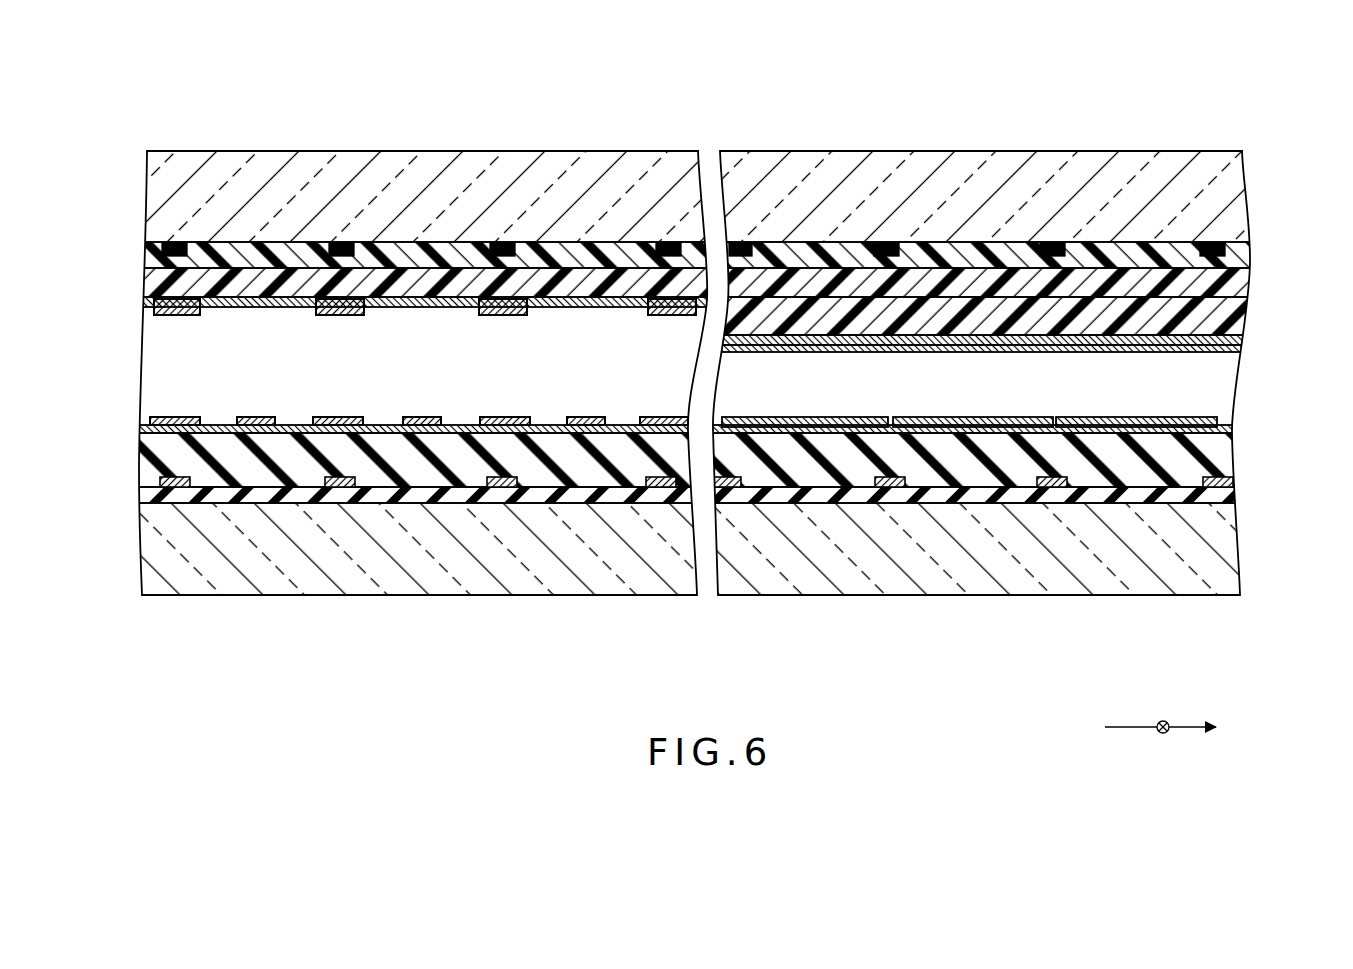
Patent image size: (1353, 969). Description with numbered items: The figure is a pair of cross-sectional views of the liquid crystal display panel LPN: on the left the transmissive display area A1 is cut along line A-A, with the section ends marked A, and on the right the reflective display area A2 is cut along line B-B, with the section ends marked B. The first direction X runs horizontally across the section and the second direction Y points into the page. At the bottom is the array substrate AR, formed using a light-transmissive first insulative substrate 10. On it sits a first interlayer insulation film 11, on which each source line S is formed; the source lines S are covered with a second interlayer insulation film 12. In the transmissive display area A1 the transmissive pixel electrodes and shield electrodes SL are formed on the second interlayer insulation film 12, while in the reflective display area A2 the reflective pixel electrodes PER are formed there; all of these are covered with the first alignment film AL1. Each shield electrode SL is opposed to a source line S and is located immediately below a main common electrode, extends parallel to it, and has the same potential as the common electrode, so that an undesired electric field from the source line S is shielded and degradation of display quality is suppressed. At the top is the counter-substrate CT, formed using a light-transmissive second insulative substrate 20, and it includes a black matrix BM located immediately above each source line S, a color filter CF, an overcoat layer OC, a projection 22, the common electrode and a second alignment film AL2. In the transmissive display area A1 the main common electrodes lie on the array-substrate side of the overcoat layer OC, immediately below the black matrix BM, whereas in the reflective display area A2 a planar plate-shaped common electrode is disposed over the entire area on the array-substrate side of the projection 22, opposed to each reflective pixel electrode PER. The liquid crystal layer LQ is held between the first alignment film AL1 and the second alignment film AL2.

The second insulative substrate 20 is at (152, 189).
The color filter CF is at (152, 255).
The overcoat layer OC is at (152, 281).
The projection 22 is at (1246, 313).
The second alignment film AL2 is at (150, 316).
The liquid crystal layer LQ is at (147, 371).
The first alignment film AL1 is at (145, 414).
The shield electrode SL is at (176, 416).
The reflective pixel electrode PER is at (812, 416).
The second interlayer insulation film 12 is at (142, 466).
The first interlayer insulation film 11 is at (142, 493).
The source line S is at (175, 488).
The first insulative substrate 10 is at (143, 540).
The black matrix BM is at (174, 244).
The counter-substrate CT is at (143, 148).
The liquid crystal display panel LPN is at (1253, 148).
The array substrate AR is at (140, 597).
The transmissive display area A1 is at (695, 118).
The reflective display area A2 is at (730, 118).
The line A- A is at (418, 618).
The line B- B is at (981, 618).
The first direction X is at (1176, 728).
The second direction Y is at (1163, 744).